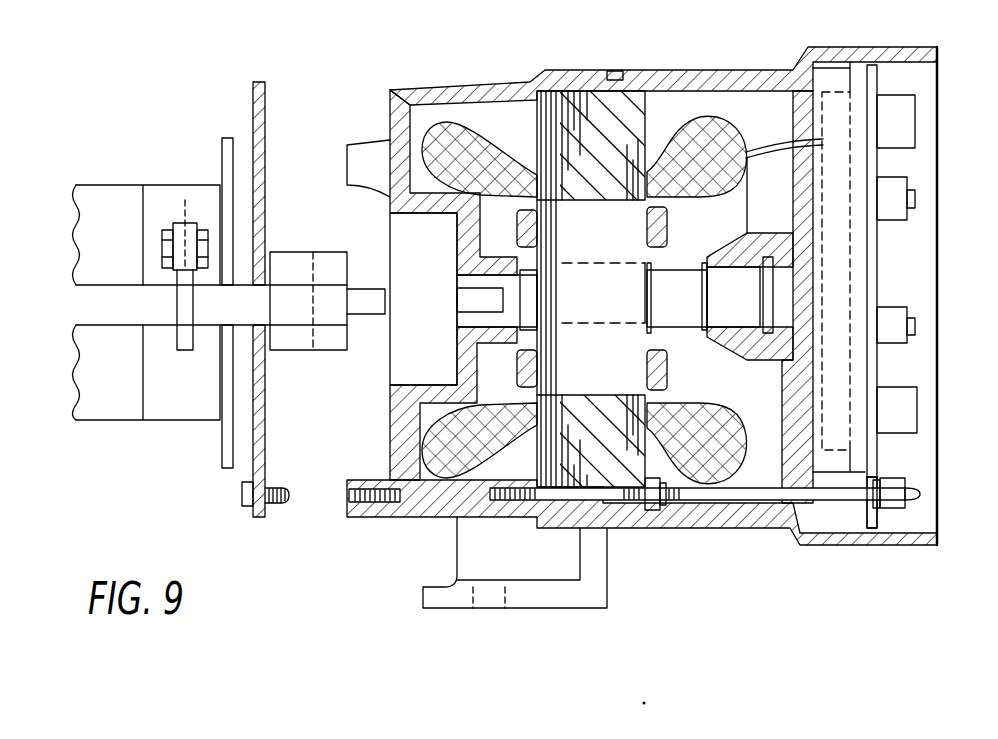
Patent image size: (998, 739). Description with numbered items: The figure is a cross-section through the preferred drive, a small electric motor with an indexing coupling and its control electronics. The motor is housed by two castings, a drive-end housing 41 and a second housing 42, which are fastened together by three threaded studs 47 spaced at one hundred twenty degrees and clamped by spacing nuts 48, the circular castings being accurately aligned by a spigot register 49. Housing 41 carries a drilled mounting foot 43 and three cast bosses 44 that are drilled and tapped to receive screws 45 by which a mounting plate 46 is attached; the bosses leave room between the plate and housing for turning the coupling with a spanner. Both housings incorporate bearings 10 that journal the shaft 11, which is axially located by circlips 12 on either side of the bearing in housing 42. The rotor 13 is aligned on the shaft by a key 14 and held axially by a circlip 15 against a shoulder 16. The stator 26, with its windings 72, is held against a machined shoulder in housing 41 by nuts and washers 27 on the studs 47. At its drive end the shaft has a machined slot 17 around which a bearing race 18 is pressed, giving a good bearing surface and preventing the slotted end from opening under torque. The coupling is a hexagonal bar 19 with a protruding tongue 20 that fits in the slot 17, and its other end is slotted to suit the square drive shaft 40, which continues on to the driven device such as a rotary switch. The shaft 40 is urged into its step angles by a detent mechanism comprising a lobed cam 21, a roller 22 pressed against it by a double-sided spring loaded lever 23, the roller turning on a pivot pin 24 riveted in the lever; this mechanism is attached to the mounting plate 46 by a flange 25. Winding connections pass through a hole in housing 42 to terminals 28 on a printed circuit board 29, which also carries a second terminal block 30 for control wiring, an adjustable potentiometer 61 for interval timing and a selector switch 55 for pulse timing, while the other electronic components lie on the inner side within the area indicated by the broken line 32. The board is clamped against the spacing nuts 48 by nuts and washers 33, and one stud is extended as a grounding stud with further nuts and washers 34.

The bearings 10 is at (750, 262).
The shaft 11 is at (678, 273).
The circlips 12 is at (706, 266).
The rotor 13 is at (600, 373).
The key 14 is at (598, 262).
The circlip 15 is at (651, 307).
The shoulder 16 is at (521, 254).
The machined slot 17 is at (476, 301).
The bearing race 18 is at (460, 284).
The hexagonal bar 19 is at (299, 342).
The protruding tongue 20 is at (374, 315).
The cam 21 is at (178, 348).
The roller 22 is at (188, 228).
The spring loaded lever 23 is at (166, 232).
The pivot pin 24 is at (180, 222).
The flange 25 is at (225, 452).
The stator 26 is at (557, 481).
The nuts and washers 27 is at (656, 512).
The terminals 28 is at (905, 118).
The printed circuit board 29 is at (877, 247).
The second terminal block 30 is at (911, 414).
The broken line 32 is at (833, 92).
The nuts and washers 33 is at (882, 512).
The nuts and washers 34 is at (912, 489).
The drive shaft 40 is at (225, 307).
The housing 41 is at (408, 96).
The housing 42 is at (870, 541).
The mounting foot 43 is at (432, 595).
The cast bosses 44 is at (362, 152).
The screws 45 is at (241, 506).
The mounting plate 46 is at (256, 82).
The threaded studs 47 is at (736, 501).
The spacing nuts 48 is at (806, 540).
The spigot register 49 is at (617, 70).
The selector switch 55 is at (916, 326).
The adjustable potentiometer 61 is at (916, 199).
The windings 72 is at (440, 434).